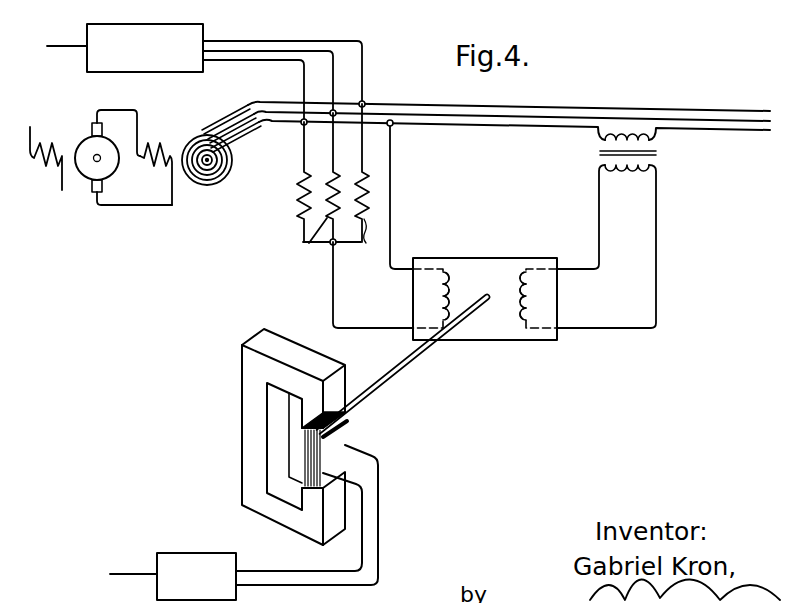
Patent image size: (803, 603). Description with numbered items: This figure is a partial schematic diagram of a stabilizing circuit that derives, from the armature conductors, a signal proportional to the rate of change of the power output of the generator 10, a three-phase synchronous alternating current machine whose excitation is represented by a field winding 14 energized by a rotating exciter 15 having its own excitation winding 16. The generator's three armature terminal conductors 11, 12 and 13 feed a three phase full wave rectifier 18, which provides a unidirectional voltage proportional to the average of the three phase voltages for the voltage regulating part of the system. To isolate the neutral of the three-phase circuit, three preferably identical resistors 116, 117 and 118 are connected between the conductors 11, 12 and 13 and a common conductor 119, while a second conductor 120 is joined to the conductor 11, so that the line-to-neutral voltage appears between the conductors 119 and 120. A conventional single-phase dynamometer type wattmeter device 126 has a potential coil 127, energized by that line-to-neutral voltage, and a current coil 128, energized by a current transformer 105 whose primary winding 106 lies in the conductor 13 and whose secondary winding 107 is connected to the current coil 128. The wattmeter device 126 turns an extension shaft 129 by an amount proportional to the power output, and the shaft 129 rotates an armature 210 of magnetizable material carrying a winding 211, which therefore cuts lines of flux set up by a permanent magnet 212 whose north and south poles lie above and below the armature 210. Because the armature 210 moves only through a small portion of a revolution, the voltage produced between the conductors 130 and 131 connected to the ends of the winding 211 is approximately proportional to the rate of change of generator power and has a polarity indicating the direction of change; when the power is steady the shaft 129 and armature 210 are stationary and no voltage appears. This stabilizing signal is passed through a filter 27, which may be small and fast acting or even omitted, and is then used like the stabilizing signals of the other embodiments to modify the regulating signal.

The dynamoelectric machine 10 is at (231, 165).
The armature terminal conductor 11 is at (700, 110).
The armature terminal conductor 12 is at (732, 119).
The armature terminal conductor 13 is at (724, 130).
The field winding 14 is at (150, 146).
The rotating exciter 15 is at (113, 173).
The excitation winding 16 is at (47, 146).
The three phase full wave rectifier 18 is at (148, 24).
The filter 27 is at (190, 553).
The current transformer 105 is at (597, 152).
The primary winding 106 is at (594, 139).
The secondary winding 107 is at (630, 172).
The resistor 116 is at (300, 191).
The resistor 117 is at (328, 241).
The resistor 118 is at (365, 240).
The common conductor 119 is at (334, 270).
The second conductor 120 is at (391, 212).
The wattmeter device 126 is at (479, 258).
The potential coil 127 is at (442, 258).
The current coil 128 is at (531, 337).
The extension shaft 129 is at (413, 369).
The conductor 130 is at (379, 507).
The conductor 131 is at (363, 529).
The armature 210 is at (349, 412).
The winding 211 is at (325, 446).
The permanent magnet 212 is at (242, 380).